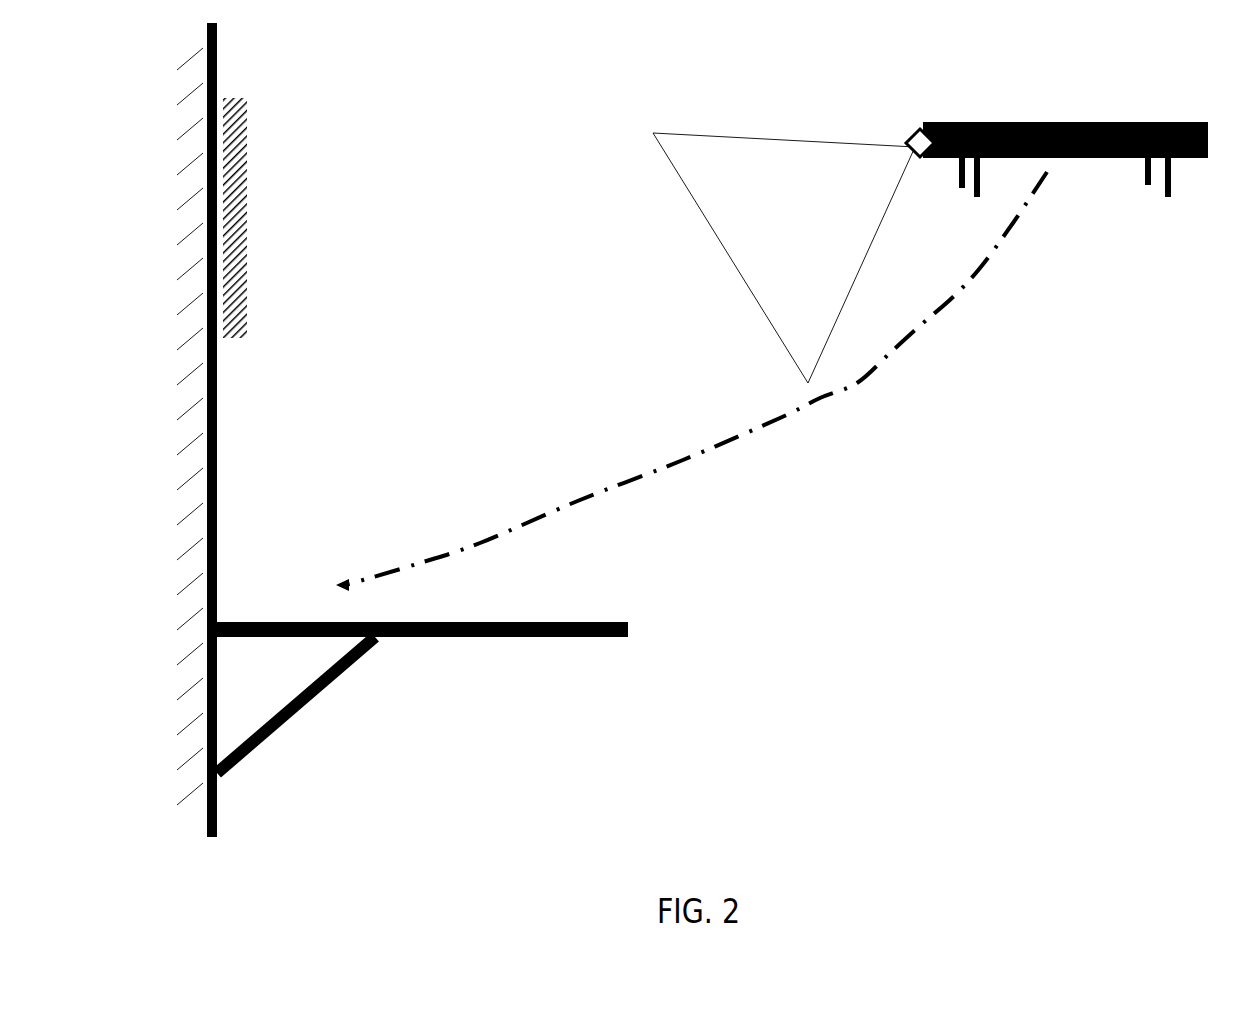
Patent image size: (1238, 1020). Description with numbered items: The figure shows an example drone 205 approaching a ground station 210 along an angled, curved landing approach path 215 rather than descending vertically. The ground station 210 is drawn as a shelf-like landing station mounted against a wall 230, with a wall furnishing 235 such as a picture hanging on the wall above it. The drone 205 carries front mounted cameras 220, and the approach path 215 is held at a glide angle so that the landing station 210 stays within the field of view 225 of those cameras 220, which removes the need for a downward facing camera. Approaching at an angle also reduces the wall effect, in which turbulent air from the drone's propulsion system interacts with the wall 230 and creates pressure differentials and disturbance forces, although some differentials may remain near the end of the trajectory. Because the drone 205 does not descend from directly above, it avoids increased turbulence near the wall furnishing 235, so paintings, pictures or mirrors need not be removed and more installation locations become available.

The drone 205 is at (1033, 122).
The ground station 210 is at (605, 622).
The landing approach path 215 is at (538, 517).
The front mounted cameras 220 is at (918, 130).
The field of view 225 is at (683, 138).
The wall 230 is at (208, 412).
The wall furnishings 235 is at (247, 255).